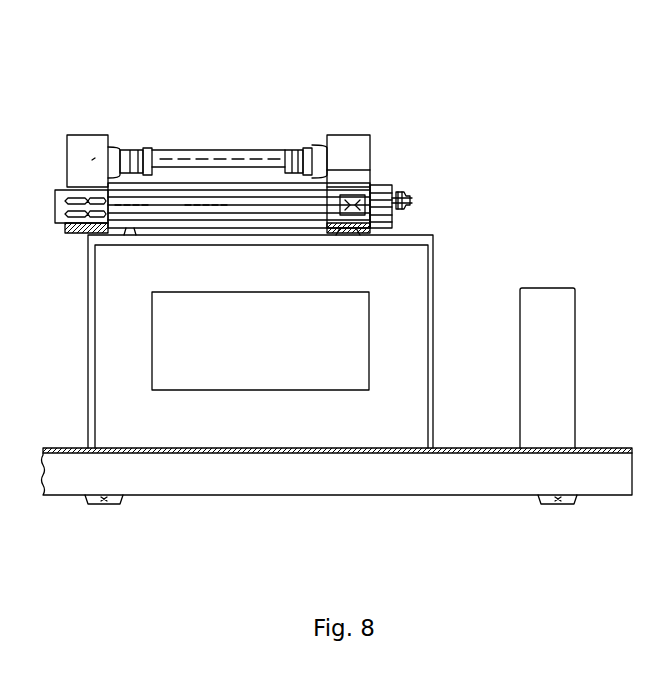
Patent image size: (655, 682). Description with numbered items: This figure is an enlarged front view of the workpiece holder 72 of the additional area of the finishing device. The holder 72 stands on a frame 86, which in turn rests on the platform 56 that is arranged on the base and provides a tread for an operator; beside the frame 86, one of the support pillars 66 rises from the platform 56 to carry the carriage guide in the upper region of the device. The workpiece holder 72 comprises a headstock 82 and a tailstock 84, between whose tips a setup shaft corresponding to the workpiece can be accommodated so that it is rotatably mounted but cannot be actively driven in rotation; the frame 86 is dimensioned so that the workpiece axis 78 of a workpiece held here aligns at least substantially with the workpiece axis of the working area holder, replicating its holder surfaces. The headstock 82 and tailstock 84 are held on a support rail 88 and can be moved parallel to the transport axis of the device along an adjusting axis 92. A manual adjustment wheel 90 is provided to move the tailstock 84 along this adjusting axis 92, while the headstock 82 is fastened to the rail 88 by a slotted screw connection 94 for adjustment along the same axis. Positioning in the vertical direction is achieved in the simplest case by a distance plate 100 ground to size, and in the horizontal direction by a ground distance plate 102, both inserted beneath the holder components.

The platform 56 is at (370, 480).
The support pillar 66 is at (565, 368).
The workpiece holder 72 is at (364, 112).
The workpiece axis 78 is at (245, 150).
The headstock 82 is at (82, 152).
The tailstock 84 is at (350, 156).
The frame 86 is at (417, 320).
The support rail 88 is at (392, 183).
The manual adjustment wheel 90 is at (412, 200).
The adjusting axis 92 is at (208, 205).
The slotted screw connection 94 is at (72, 236).
The distance plate 100 is at (130, 236).
The distance plate 102 is at (87, 233).